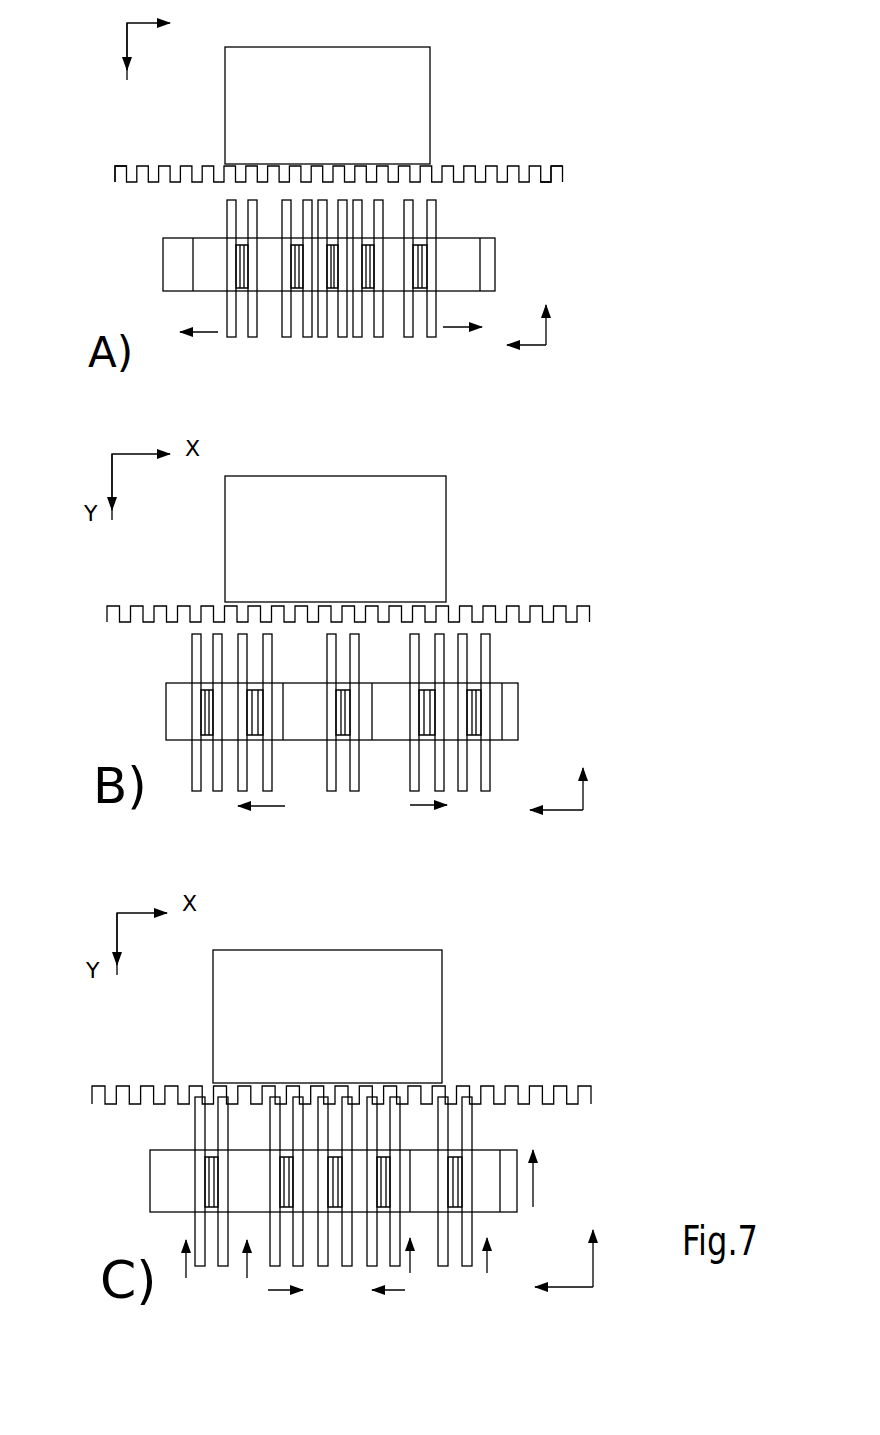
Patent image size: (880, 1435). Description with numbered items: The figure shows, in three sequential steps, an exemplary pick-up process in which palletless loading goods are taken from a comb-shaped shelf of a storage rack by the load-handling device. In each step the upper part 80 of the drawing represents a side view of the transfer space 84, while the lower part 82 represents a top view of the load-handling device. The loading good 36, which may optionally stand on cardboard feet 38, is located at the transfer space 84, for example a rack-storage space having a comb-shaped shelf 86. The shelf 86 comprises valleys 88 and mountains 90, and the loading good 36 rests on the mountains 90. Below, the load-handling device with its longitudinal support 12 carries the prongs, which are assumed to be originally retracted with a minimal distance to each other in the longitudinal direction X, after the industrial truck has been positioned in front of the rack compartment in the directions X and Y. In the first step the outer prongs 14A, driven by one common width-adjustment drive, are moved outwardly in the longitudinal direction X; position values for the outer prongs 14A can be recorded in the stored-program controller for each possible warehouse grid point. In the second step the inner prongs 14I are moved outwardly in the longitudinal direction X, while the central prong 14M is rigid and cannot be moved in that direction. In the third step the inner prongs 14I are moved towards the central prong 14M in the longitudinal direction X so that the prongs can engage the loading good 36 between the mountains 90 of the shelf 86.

In FIG. 7A, the longitudinal support 12 is at (364, 292).
In FIG. 7B, the longitudinal support 12 is at (391, 737).
In FIG. 7C, the longitudinal support 12 is at (341, 1193).
In FIG. 7A, the outer prongs 14A is at (227, 348).
In FIG. 7A, the inner prongs 14I is at (282, 348).
In FIG. 7A, the central prong 14M is at (318, 348).
In FIG. 7B, the central prong 14M is at (321, 800).
In FIG. 7A, the loading good 36 is at (430, 68).
In FIG. 7B, the loading good 36 is at (446, 502).
In FIG. 7C, the loading good 36 is at (442, 998).
In FIG. 7A, the cardboard feet 38 is at (446, 156).
In FIG. 7A, the upper part 80 is at (337, 131).
In FIG. 7B, the upper part 80 is at (391, 542).
In FIG. 7C, the upper part 80 is at (385, 1015).
In FIG. 7A, the lower part 82 is at (403, 285).
In FIG. 7B, the lower part 82 is at (420, 735).
In FIG. 7C, the lower part 82 is at (414, 1197).
In FIG. 7A, the transfer space 84 is at (126, 103).
In FIG. 7A, the comb-shaped shelf 86 is at (109, 185).
In FIG. 7A, the valleys 88 is at (559, 165).
In FIG. 7A, the mountains 90 is at (566, 196).